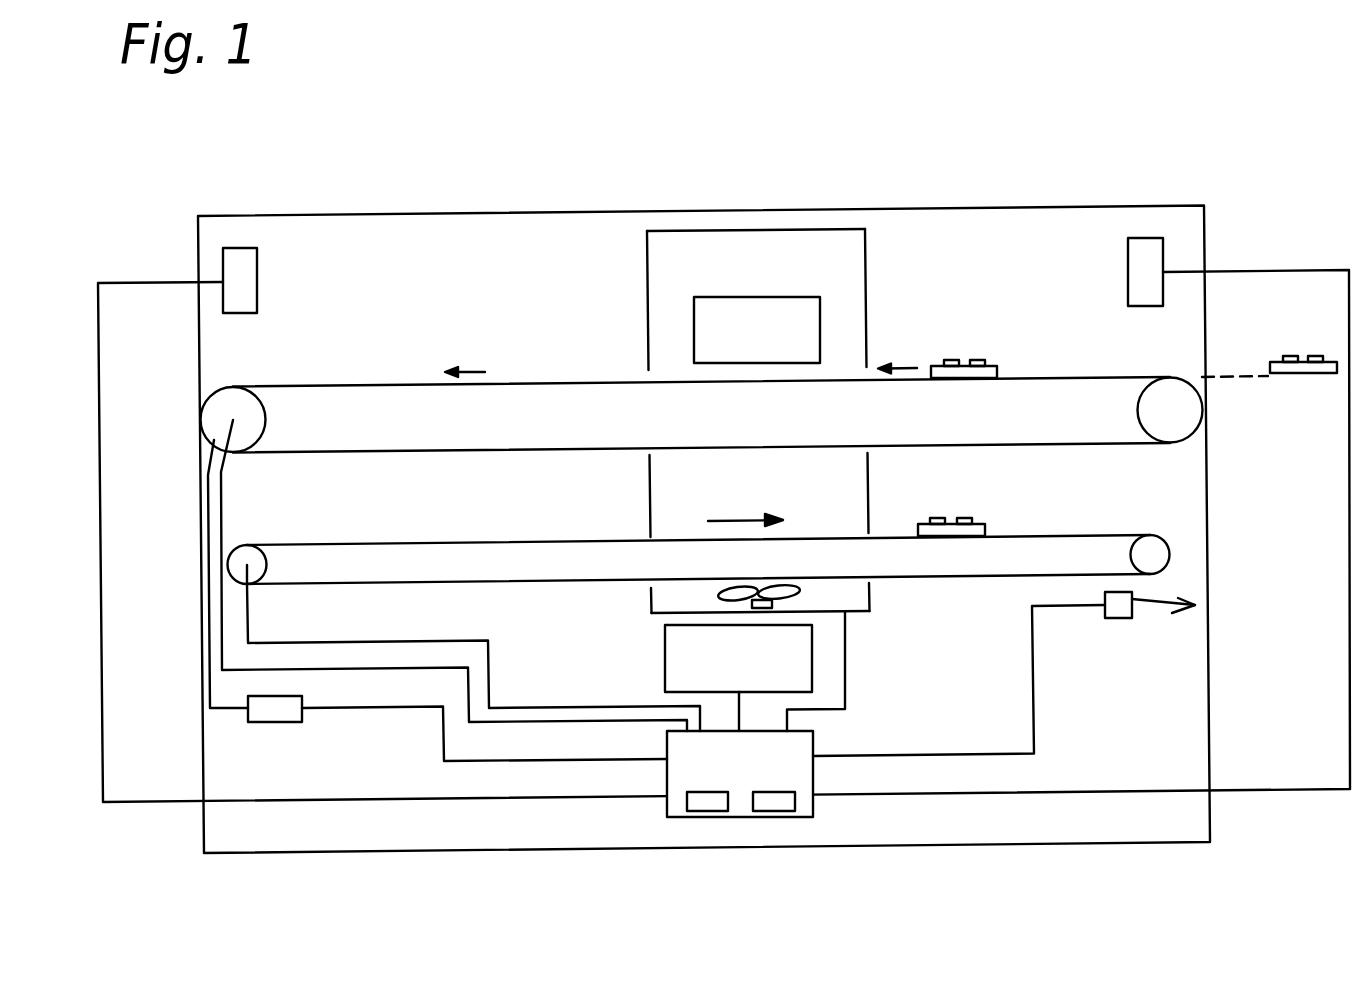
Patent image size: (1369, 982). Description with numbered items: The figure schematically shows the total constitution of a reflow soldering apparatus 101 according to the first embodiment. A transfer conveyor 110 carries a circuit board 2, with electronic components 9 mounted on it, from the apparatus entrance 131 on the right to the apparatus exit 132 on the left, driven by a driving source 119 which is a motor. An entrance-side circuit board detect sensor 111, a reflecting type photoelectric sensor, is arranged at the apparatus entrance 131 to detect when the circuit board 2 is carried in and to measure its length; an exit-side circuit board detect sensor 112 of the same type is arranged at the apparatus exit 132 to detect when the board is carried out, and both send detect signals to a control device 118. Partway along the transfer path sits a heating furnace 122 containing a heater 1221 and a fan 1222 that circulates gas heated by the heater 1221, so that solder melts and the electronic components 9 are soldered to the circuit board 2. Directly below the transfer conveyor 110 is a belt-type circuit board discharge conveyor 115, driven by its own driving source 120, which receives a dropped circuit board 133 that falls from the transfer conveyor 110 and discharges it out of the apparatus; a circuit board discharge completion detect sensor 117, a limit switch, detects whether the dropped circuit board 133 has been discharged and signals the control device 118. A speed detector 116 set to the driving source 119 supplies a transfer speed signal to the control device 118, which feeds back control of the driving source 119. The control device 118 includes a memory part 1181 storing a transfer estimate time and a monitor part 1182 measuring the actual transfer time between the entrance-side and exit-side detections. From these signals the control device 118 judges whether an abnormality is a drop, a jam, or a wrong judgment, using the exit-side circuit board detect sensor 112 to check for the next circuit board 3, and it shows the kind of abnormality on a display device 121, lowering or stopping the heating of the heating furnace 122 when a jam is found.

The reflow soldering apparatus 101 is at (435, 211).
The transfer conveyor 110 is at (549, 383).
The entrance-side circuit board detect sensor 111 is at (1143, 238).
The exit-side circuit board detect sensor 112 is at (240, 248).
The circuit board discharge conveyor 115 is at (959, 577).
The speed detector 116 is at (270, 722).
The circuit board discharge completion detect sensor 117 is at (1118, 618).
The control device 118 is at (739, 818).
The memory part 1181 is at (810, 805).
The monitor part 1182 is at (667, 805).
The driving source 119 is at (203, 385).
The driving source 120 is at (238, 555).
The display device 121 is at (665, 660).
The heating furnace 122 is at (758, 231).
The heater 1221 is at (694, 319).
The fan 1222 is at (718, 593).
The apparatus entrance 131 is at (1178, 357).
The apparatus exit 132 is at (212, 341).
The dropped circuit board 133 is at (917, 530).
The circuit board 2 is at (960, 366).
The circuit board 3 is at (1300, 356).
The electronic components 9 is at (980, 360).